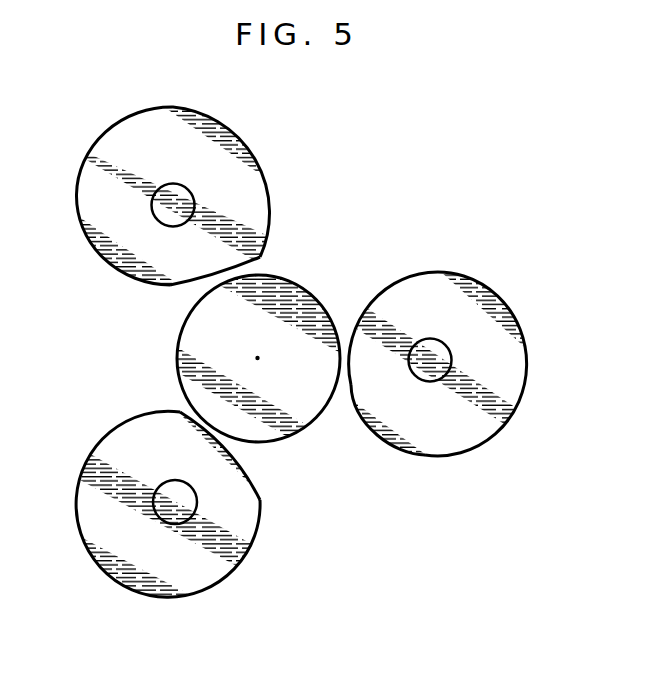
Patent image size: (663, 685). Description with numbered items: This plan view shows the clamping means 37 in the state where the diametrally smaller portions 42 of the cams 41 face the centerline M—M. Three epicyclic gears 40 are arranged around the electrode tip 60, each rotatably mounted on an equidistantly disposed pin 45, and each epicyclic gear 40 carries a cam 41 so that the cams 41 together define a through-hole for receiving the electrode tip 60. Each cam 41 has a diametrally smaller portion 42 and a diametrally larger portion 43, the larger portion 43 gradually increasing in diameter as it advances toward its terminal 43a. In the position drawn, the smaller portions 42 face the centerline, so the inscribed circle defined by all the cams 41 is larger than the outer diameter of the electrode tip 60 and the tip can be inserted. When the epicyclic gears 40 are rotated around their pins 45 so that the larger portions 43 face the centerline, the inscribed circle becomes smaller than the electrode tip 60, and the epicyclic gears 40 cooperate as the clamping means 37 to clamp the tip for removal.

The clamping means 37 is at (309, 334).
The epicyclic gear 40 is at (309, 334).
The cam 41 is at (118, 270).
The diametrally smaller portion 42 is at (233, 257).
The diametrally larger portion 43 is at (78, 210).
The terminal 43a is at (260, 257).
The pin 45 is at (181, 194).
The electrode tip 60 is at (293, 293).